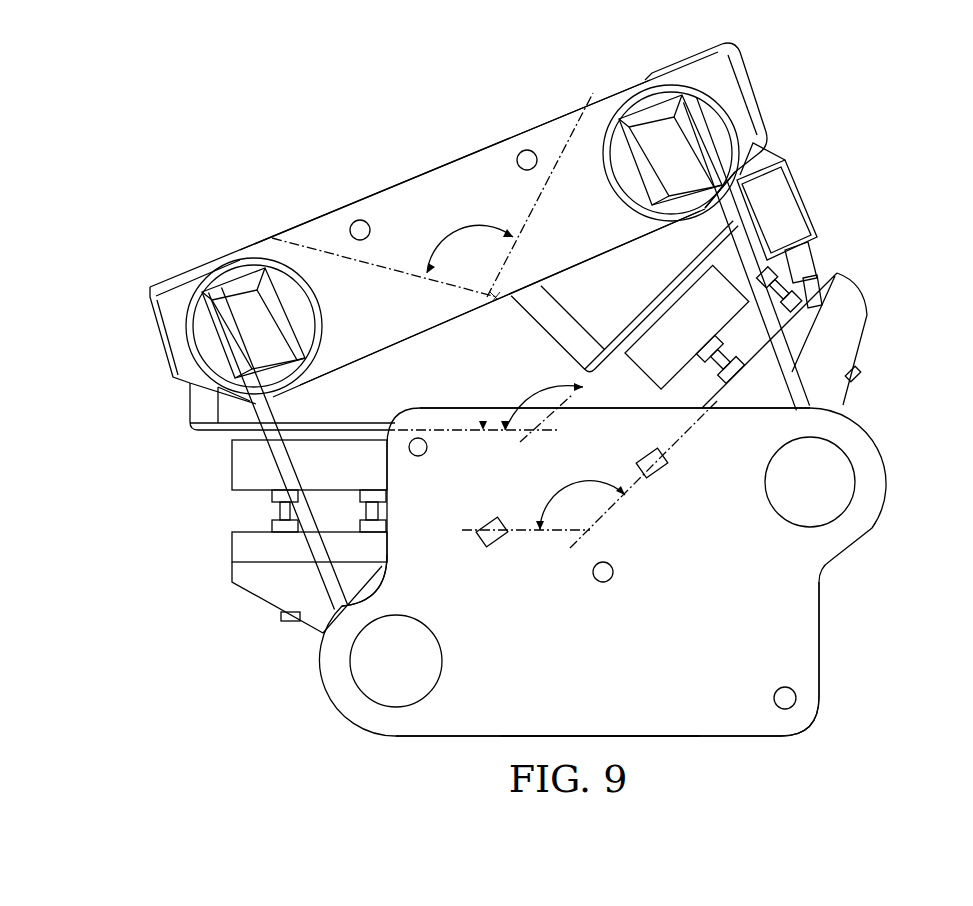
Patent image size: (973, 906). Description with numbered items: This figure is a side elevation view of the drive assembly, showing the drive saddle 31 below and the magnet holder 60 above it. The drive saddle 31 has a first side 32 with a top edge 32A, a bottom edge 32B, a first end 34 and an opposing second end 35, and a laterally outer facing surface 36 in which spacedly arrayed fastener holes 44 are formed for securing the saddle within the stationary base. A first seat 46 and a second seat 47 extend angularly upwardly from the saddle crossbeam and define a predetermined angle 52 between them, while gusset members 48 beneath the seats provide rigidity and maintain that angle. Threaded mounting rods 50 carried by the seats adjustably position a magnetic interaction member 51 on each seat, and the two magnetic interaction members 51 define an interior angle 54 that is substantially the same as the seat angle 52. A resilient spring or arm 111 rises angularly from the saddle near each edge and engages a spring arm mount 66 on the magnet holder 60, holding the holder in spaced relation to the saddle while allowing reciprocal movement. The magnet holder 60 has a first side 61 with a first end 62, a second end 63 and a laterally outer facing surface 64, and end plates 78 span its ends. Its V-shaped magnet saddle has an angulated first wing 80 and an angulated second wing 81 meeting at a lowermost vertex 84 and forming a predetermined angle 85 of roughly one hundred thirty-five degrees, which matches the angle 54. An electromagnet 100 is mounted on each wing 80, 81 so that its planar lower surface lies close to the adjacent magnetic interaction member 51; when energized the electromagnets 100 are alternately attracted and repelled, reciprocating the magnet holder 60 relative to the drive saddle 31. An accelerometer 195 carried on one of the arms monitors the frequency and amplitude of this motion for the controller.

The drive saddle 31 is at (887, 447).
The first side 32 is at (800, 607).
The top edge 32A is at (598, 410).
The bottom edge 32B is at (688, 738).
The first end 34 is at (820, 660).
The second end 35 is at (387, 563).
The laterally outer facing surface 36 is at (602, 672).
The fastener holes 44 is at (648, 480).
The first seat 46 is at (837, 280).
The second seat 47 is at (267, 559).
The gusset members 48 is at (288, 600).
The mounting rods 50 is at (277, 508).
The magnetic interaction member 51 is at (323, 474).
The predetermined angle 52 is at (557, 483).
The interior angle 54 is at (507, 437).
The magnet holder 60 is at (352, 183).
The first side 61 is at (413, 175).
The first end 62 is at (722, 82).
The second end 63 is at (170, 317).
The laterally outer facing surface 64 is at (562, 252).
The spring arm mount 66 is at (240, 295).
The end plates 78 is at (142, 300).
The angulated first wing 80 is at (557, 165).
The angulated second wing 81 is at (345, 262).
The vertex 84 is at (500, 293).
The predetermined angle 85 is at (457, 238).
The electromagnet 100 is at (378, 395).
The resilient spring or arm 111 is at (258, 417).
The accelerometer 195 is at (764, 222).